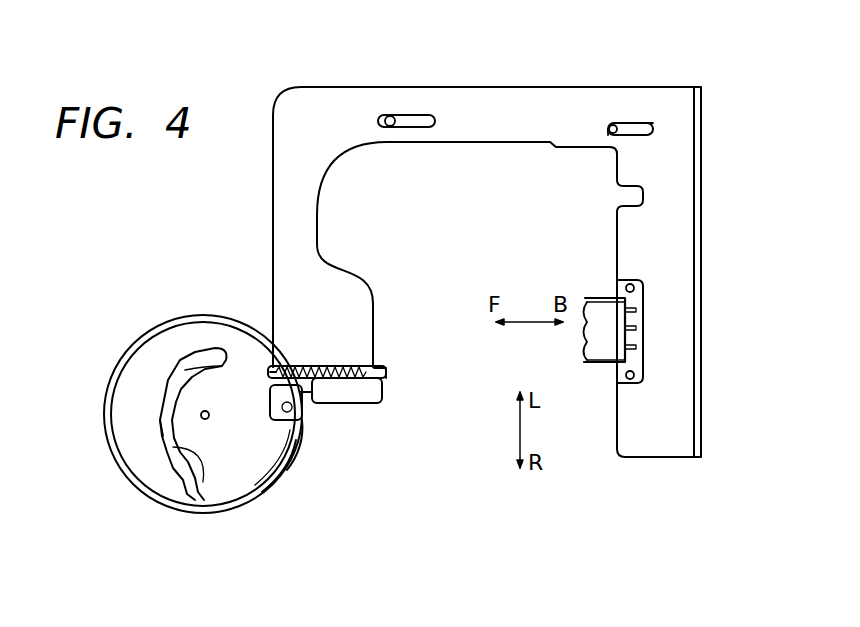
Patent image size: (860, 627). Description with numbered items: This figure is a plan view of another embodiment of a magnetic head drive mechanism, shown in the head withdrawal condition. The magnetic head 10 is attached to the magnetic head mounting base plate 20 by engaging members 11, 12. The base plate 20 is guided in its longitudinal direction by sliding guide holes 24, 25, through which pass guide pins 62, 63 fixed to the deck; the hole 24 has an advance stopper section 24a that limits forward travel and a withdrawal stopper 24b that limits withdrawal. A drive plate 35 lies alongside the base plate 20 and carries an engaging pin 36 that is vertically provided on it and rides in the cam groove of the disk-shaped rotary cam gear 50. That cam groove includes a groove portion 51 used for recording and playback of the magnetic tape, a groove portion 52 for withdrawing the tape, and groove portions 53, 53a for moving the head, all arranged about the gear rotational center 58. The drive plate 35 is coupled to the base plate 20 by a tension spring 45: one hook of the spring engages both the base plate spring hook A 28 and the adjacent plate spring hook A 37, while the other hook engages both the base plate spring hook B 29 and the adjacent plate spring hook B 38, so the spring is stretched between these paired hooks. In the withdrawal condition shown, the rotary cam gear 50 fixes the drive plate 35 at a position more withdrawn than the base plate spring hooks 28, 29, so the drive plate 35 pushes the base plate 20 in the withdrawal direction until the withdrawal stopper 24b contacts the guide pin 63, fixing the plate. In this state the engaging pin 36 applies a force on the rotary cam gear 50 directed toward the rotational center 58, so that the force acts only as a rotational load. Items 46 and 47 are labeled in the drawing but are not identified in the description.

The magnetic head 10 is at (617, 322).
The engaging member 11 is at (640, 282).
The engaging member 12 is at (638, 377).
The magnetic head mounting base plate 20 is at (690, 115).
The sliding guide hole 24 is at (645, 122).
The advance stopper section 24a is at (653, 121).
The withdrawal stopper 24b is at (609, 127).
The sliding guide hole 25 is at (412, 116).
The base plate spring hook A 28 is at (372, 366).
The base plate spring hook B 29 is at (282, 366).
The drive plate 35 is at (338, 393).
The engaging pin 36 is at (289, 471).
The plate spring hook A 37 is at (380, 392).
The plate spring hook B 38 is at (302, 402).
The tension spring 45 is at (332, 367).
The spring hook 46 is at (388, 372).
The engaging portion 47 is at (272, 372).
The disk-shaped rotary cam gear 50 is at (128, 411).
The groove portion for recording and playing back 51 is at (158, 420).
The groove portion for withdrawing 52 is at (275, 478).
The groove portion for moving the head 53 is at (175, 505).
The groove portion for moving the head 53a is at (165, 385).
The gear rotational center 58 is at (207, 419).
The guide pin 62 is at (388, 116).
The guide pin 63 is at (617, 124).